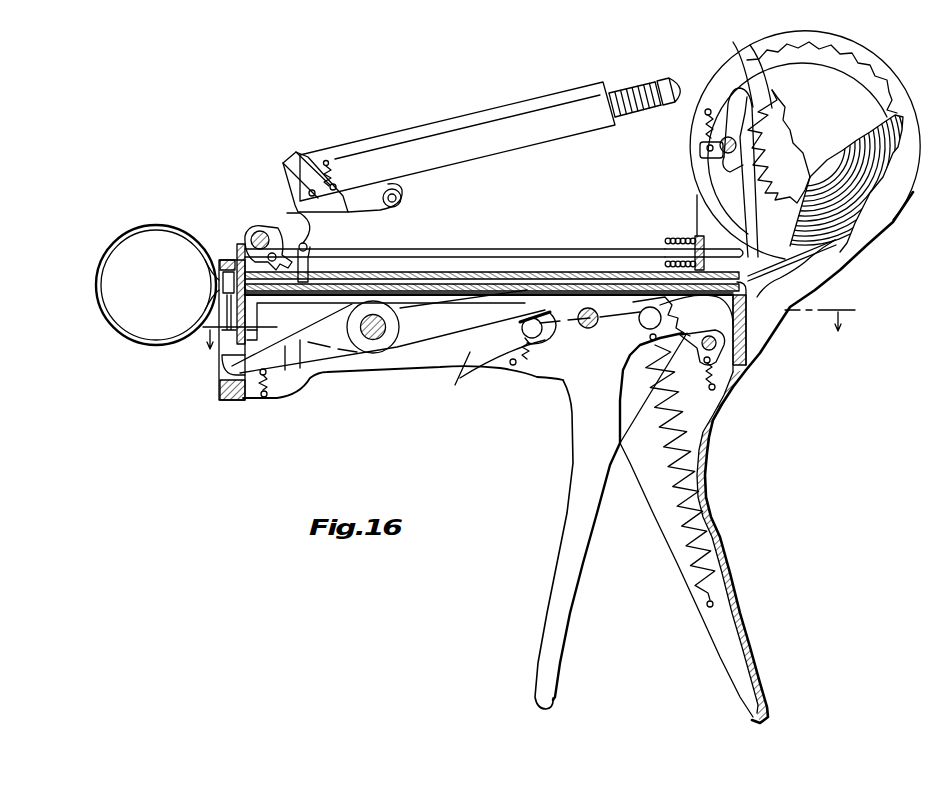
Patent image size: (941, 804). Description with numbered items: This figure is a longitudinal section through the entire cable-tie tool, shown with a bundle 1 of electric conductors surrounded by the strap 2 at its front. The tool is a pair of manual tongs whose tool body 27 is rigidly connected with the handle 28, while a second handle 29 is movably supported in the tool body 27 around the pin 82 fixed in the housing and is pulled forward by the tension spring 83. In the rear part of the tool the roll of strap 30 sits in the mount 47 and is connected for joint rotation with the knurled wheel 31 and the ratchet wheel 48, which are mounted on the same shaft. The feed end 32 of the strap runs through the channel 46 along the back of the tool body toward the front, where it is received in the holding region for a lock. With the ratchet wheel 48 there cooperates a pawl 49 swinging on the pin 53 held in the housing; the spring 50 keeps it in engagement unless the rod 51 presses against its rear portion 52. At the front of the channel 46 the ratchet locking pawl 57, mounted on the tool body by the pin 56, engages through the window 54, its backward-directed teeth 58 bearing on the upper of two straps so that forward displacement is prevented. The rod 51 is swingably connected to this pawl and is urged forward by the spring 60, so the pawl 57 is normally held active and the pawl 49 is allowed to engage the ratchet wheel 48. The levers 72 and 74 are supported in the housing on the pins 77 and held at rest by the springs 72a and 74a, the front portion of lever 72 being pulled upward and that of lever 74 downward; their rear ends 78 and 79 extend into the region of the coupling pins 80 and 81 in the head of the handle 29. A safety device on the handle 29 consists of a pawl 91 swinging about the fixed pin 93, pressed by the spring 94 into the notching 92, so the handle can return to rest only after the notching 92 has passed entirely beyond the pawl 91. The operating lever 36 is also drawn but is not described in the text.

The bundle of electric conductors 1 is at (154, 274).
The strap 2 is at (170, 344).
The tool body 27 is at (440, 372).
The handle 28 is at (728, 575).
The second handle 29 is at (577, 549).
The roll of strap 30 is at (853, 193).
The knurled wheel 31 is at (863, 77).
The feed end of the strap 32 is at (820, 252).
The operating lever 36 is at (490, 130).
The channel 46 is at (455, 271).
The mount 47 is at (893, 196).
The ratchet wheel 48 is at (757, 64).
The pawl 49 is at (727, 110).
The spring 50 is at (705, 128).
The rod 51 is at (530, 250).
The rear portion of the pawl 52 is at (727, 234).
The pin of the pawl 53 is at (727, 150).
The window 54 is at (306, 273).
The pin 56 is at (250, 233).
The ratchet locking pawl 57 is at (256, 228).
The teeth of the pawl 58 is at (287, 258).
The spring 60 is at (668, 240).
The lever 72 is at (298, 315).
The spring 72a is at (449, 386).
The lever 74 is at (331, 356).
The spring 74a is at (264, 400).
The pins 77 is at (377, 342).
The rear end of lever 78 is at (640, 317).
The rear end of lever 79 is at (538, 350).
The coupling pin 80 is at (640, 330).
The coupling pin 81 is at (512, 330).
The pin 82 is at (584, 327).
The tension spring 83 is at (690, 472).
The pawl 91 is at (712, 362).
The notching 92 is at (738, 322).
The pin 93 is at (717, 342).
The spring 94 is at (716, 380).